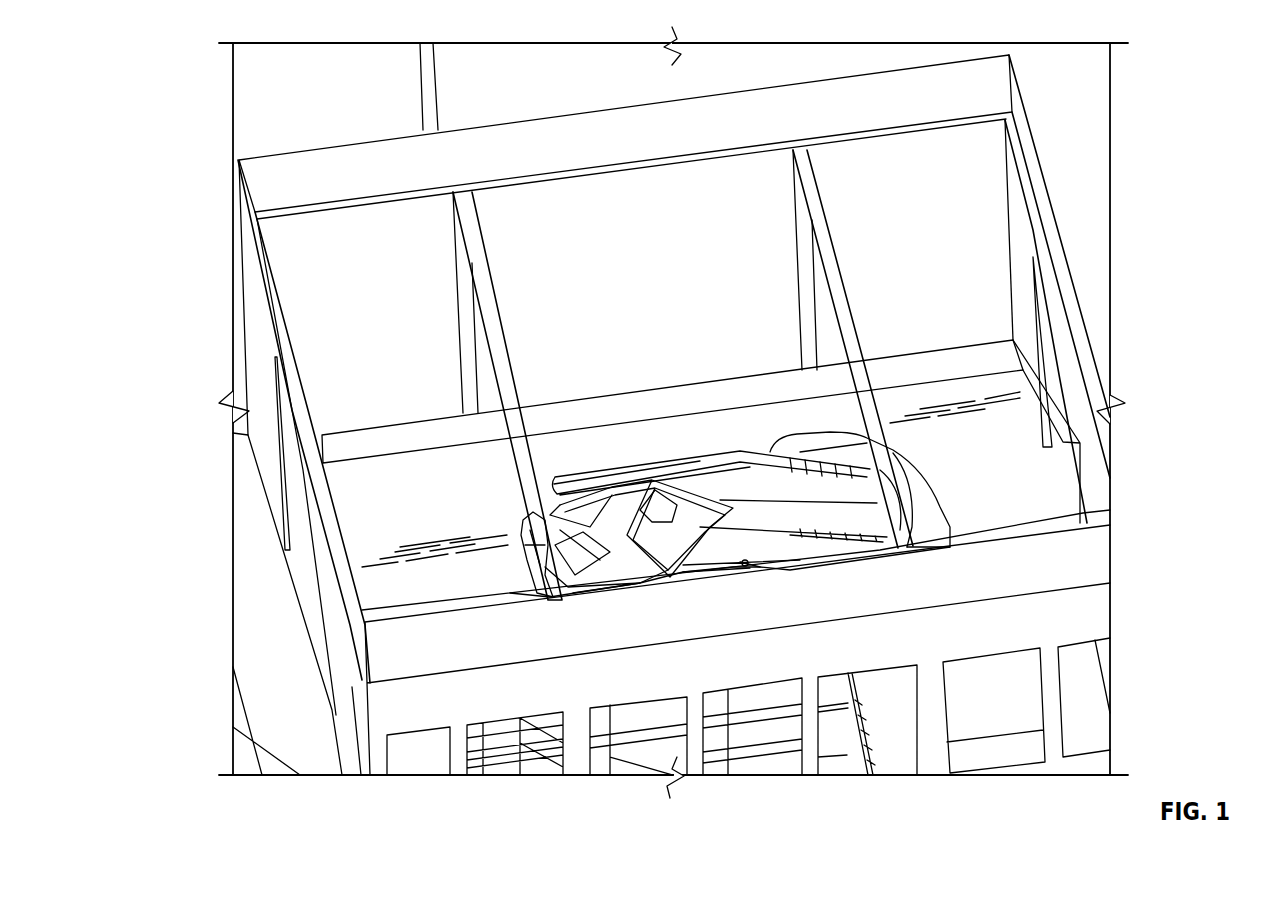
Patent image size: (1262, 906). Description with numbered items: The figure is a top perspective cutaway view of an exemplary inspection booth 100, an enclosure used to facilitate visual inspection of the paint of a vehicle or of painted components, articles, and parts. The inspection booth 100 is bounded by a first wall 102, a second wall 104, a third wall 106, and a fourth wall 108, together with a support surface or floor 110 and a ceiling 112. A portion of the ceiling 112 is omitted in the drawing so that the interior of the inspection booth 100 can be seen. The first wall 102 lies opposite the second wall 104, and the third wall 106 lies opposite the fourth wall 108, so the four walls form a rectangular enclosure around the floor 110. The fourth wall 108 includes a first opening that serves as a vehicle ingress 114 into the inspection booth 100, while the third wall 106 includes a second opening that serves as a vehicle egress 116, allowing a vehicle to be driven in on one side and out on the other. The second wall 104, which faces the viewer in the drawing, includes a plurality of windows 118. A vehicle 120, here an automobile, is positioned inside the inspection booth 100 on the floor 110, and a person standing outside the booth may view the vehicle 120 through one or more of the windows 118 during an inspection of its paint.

The inspection booth 100 is at (214, 70).
The first wall 102 is at (622, 235).
The second wall 104 is at (567, 680).
The third wall 106 is at (1030, 298).
The fourth wall 108 is at (333, 672).
The support surface or floor 110 is at (437, 527).
The ceiling 112 is at (517, 130).
The vehicle ingress 114 is at (299, 602).
The vehicle egress 116 is at (224, 218).
The windows 118 is at (407, 755).
The vehicle 120 is at (772, 443).